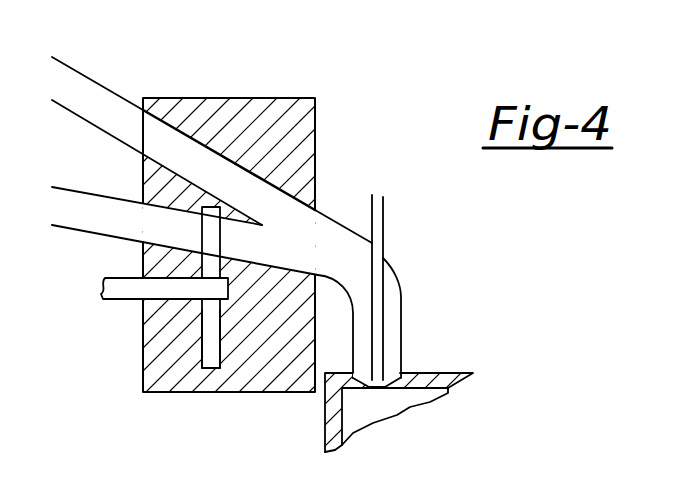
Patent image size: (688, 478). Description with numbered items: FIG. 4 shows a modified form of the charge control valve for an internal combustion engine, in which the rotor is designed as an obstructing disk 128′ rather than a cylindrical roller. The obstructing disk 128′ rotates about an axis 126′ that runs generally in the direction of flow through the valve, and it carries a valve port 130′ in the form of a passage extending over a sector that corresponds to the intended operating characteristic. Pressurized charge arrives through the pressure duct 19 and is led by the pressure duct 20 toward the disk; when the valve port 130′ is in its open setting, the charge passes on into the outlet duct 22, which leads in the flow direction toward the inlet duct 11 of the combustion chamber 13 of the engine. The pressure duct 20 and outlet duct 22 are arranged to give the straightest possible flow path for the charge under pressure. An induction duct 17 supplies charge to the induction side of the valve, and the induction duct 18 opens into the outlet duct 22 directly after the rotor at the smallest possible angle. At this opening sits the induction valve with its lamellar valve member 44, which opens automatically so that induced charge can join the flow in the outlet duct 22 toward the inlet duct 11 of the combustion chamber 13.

The inlet duct 11 is at (382, 227).
The combustion chamber 13 is at (377, 406).
The induction duct 17 is at (91, 100).
The induction duct 18 is at (190, 157).
The pressure duct 19 is at (82, 207).
The pressure duct 20 is at (163, 220).
The outlet duct 22 is at (307, 233).
The lamellar valve member 44 is at (273, 200).
The axis 126′ is at (127, 290).
The obstructing disk 128′ is at (212, 342).
The valve port 130′ is at (210, 236).